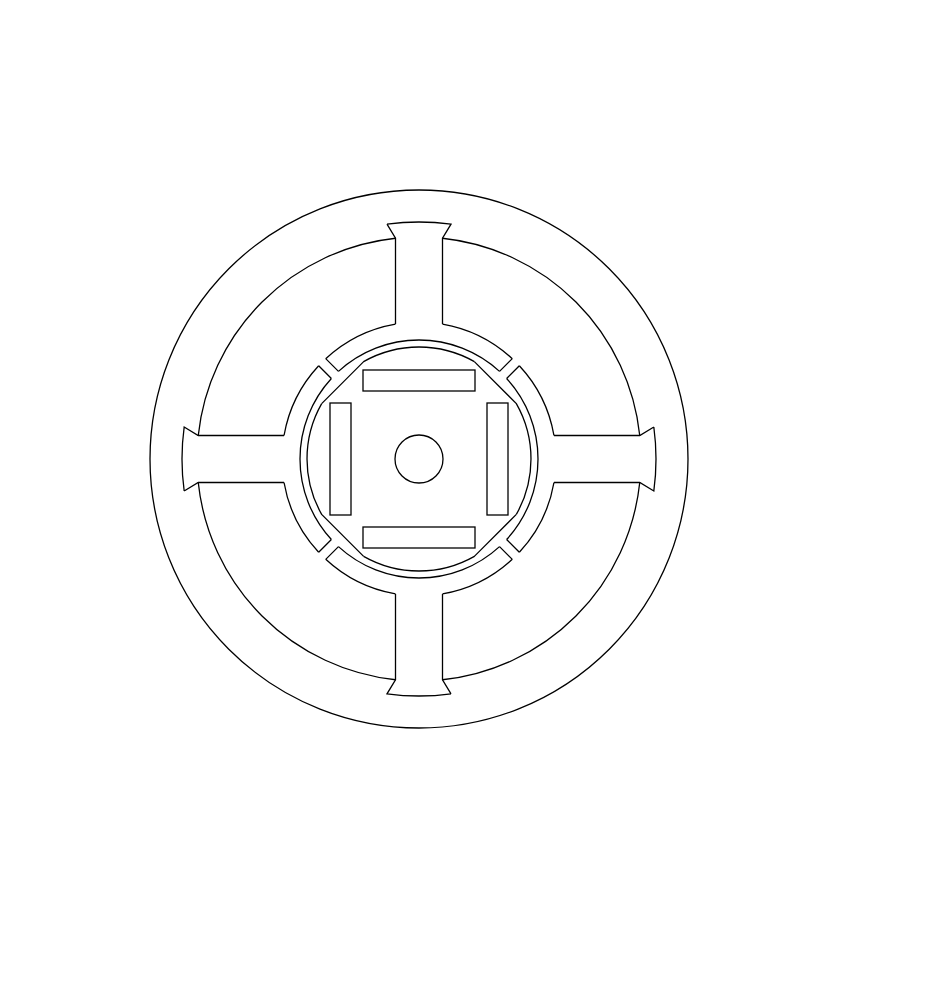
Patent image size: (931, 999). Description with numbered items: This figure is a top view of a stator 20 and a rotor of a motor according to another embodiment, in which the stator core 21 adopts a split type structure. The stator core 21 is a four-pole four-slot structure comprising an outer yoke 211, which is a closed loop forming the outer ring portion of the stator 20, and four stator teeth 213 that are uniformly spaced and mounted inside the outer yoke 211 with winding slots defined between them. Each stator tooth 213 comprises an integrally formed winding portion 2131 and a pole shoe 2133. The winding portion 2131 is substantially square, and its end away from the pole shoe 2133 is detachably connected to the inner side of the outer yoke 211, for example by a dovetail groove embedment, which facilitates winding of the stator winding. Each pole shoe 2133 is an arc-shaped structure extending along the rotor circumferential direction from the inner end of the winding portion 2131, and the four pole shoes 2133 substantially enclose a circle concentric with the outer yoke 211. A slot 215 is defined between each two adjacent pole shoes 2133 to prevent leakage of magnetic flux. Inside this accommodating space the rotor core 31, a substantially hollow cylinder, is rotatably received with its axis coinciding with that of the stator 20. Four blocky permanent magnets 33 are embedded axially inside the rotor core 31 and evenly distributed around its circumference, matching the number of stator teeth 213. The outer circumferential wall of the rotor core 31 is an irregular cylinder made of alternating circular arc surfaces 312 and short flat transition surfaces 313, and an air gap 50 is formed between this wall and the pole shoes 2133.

The stator 20 is at (330, 52).
The stator core 21 is at (785, 245).
The outer yoke 211 is at (593, 298).
The stator tooth 213 is at (733, 295).
The winding portion 2131 is at (580, 453).
The pole shoe 2133 is at (528, 390).
The slot 215 is at (503, 545).
The rotor core 31 is at (223, 255).
The circular arc surface 312 is at (297, 423).
The transition surface 313 is at (317, 393).
The permanent magnet 33 is at (338, 463).
The air gap 50 is at (430, 584).